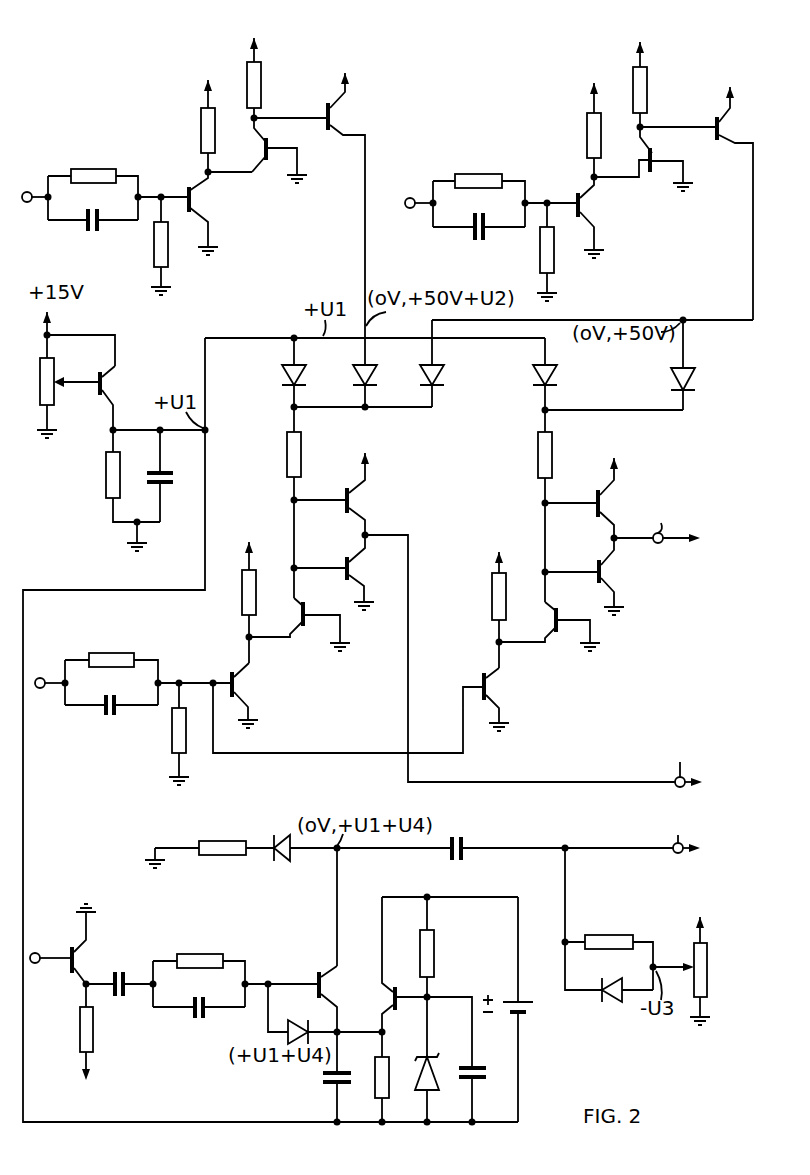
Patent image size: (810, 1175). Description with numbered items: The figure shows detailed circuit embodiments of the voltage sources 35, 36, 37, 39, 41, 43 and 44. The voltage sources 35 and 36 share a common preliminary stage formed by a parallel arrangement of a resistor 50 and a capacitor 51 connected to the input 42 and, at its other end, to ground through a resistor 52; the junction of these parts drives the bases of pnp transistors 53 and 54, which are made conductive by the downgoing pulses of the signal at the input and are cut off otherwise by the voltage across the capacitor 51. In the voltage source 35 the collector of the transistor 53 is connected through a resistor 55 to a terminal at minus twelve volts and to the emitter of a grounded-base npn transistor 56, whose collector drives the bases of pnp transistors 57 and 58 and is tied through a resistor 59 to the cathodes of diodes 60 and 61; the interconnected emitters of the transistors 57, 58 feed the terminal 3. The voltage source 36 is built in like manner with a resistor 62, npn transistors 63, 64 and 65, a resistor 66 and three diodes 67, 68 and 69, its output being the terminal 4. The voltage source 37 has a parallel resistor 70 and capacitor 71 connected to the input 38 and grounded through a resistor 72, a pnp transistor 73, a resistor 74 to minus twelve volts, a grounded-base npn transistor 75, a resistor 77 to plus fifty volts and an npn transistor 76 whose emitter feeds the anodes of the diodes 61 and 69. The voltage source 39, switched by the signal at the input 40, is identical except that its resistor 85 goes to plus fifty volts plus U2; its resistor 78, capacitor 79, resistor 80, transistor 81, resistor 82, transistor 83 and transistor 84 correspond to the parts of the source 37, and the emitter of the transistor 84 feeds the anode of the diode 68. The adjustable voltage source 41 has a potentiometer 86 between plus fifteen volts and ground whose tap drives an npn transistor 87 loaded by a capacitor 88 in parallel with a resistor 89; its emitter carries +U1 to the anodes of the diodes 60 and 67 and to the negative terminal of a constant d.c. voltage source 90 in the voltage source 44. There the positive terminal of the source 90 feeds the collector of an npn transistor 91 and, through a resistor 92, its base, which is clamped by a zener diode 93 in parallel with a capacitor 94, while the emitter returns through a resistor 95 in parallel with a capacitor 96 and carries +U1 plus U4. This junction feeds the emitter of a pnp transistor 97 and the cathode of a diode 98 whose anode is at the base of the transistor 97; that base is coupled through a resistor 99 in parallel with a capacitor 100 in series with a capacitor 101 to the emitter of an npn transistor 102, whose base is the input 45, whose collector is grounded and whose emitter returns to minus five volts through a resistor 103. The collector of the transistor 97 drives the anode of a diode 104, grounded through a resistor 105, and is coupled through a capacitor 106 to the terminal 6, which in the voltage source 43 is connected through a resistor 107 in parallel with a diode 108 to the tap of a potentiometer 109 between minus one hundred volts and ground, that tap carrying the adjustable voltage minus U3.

The terminal 3 is at (697, 546).
The terminal 4 is at (696, 789).
The terminal 6 is at (695, 853).
The voltage source 35 is at (512, 454).
The voltage source 36 is at (271, 446).
The voltage source 37 is at (732, 218).
The input 38 is at (410, 198).
The voltage source 39 is at (337, 224).
The input 40 is at (27, 191).
The adjustable voltage source 41 is at (159, 369).
The input 42 is at (40, 678).
The voltage source 43 is at (641, 891).
The voltage source 44 is at (528, 883).
The input 45 is at (35, 953).
The resistor 50 is at (110, 653).
The capacitor 51 is at (115, 715).
The resistor 52 is at (172, 718).
The pnp transistor 53 is at (490, 686).
The pnp transistor 54 is at (240, 689).
The resistor 55 is at (492, 595).
The npn transistor 56 is at (560, 636).
The pnp transistor 57 is at (604, 572).
The pnp transistor 58 is at (603, 500).
The resistor 59 is at (570, 456).
The diode 60 is at (533, 378).
The diode 61 is at (671, 379).
The resistor 62 is at (242, 588).
The npn transistor 63 is at (307, 630).
The npn transistor 64 is at (352, 568).
The npn transistor 65 is at (352, 500).
The resistor 66 is at (302, 460).
The diode 67 is at (283, 378).
The diode 68 is at (353, 378).
The diode 69 is at (420, 378).
The resistor 70 is at (476, 174).
The capacitor 71 is at (484, 240).
The resistor 72 is at (540, 238).
The pnp transistor 73 is at (586, 207).
The resistor 74 is at (587, 139).
The npn transistor 75 is at (660, 176).
The npn transistor 76 is at (714, 146).
The resistor 77 is at (647, 75).
The resistor 78 is at (95, 169).
The capacitor 79 is at (97, 231).
The resistor 80 is at (154, 232).
The pnp transistor 81 is at (199, 203).
The resistor 82 is at (201, 124).
The npn transistor 83 is at (265, 163).
The npn transistor 84 is at (338, 136).
The resistor 85 is at (261, 97).
The potentiometer 86 is at (54, 376).
The npn transistor 87 is at (99, 392).
The capacitor 88 is at (166, 486).
The resistor 89 is at (106, 486).
The constant d.c. voltage source 90 is at (536, 1014).
The npn transistor 91 is at (390, 994).
The resistor 92 is at (434, 964).
The zener diode 93 is at (439, 1060).
The capacitor 94 is at (485, 1067).
The resistor 95 is at (390, 1060).
The capacitor 96 is at (349, 1068).
The pnp transistor 97 is at (327, 973).
The diode 98 is at (301, 1017).
The resistor 99 is at (198, 954).
The capacitor 100 is at (199, 1018).
The capacitor 101 is at (115, 972).
The npn transistor 102 is at (80, 952).
The resistor 103 is at (93, 1040).
The diode 104 is at (283, 861).
The resistor 105 is at (228, 855).
The capacitor 106 is at (450, 856).
The resistor 107 is at (602, 935).
The diode 108 is at (612, 1002).
The potentiometer 109 is at (692, 955).